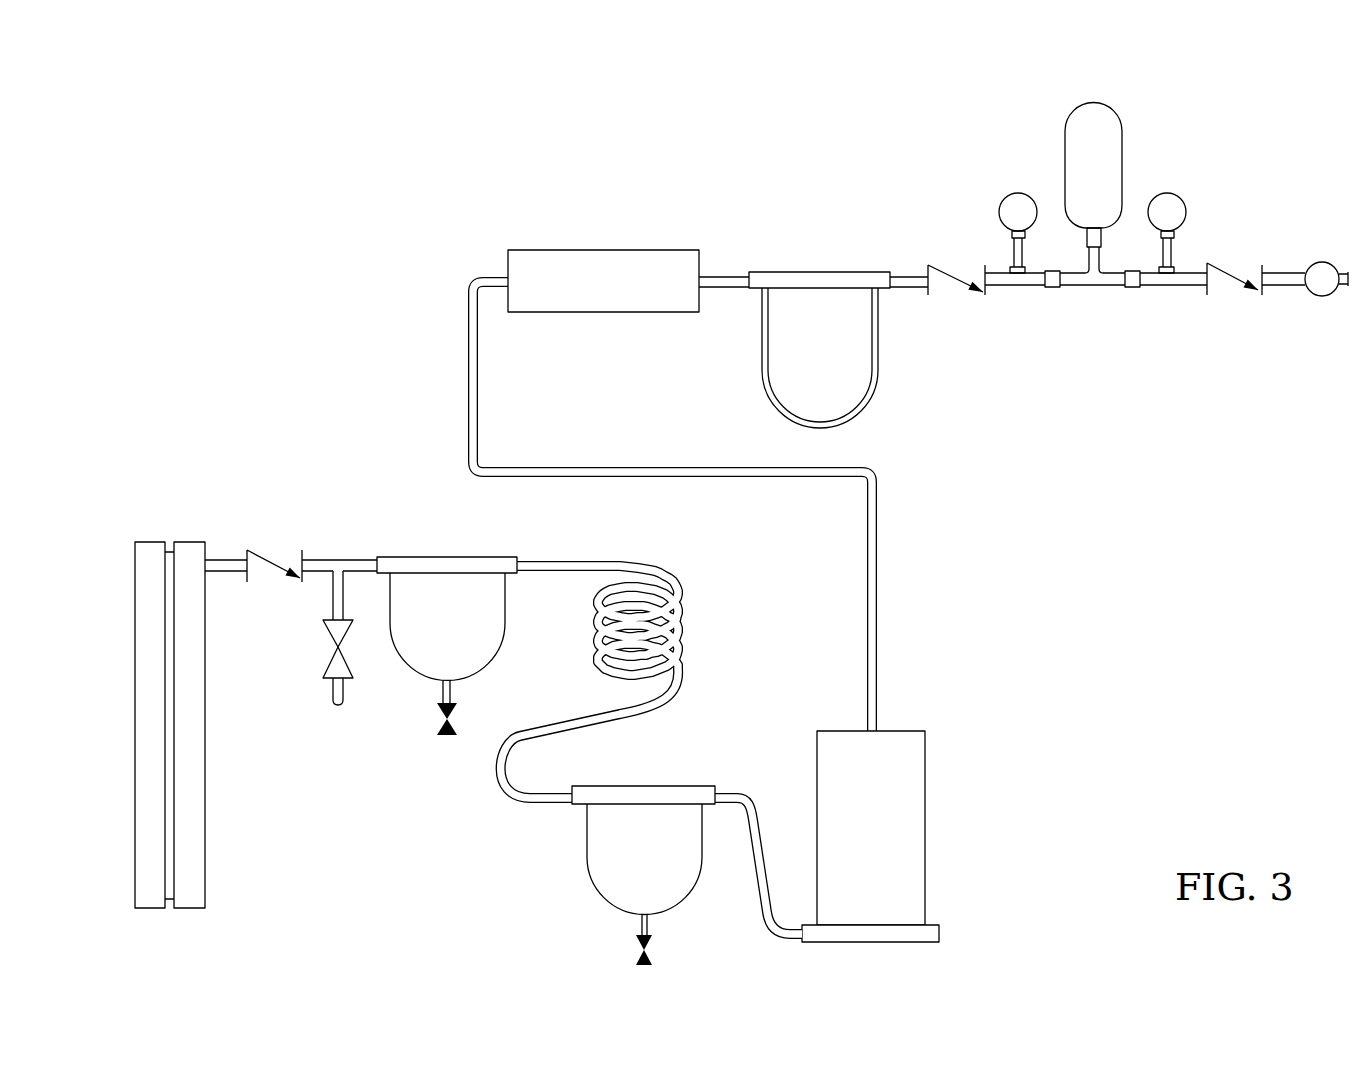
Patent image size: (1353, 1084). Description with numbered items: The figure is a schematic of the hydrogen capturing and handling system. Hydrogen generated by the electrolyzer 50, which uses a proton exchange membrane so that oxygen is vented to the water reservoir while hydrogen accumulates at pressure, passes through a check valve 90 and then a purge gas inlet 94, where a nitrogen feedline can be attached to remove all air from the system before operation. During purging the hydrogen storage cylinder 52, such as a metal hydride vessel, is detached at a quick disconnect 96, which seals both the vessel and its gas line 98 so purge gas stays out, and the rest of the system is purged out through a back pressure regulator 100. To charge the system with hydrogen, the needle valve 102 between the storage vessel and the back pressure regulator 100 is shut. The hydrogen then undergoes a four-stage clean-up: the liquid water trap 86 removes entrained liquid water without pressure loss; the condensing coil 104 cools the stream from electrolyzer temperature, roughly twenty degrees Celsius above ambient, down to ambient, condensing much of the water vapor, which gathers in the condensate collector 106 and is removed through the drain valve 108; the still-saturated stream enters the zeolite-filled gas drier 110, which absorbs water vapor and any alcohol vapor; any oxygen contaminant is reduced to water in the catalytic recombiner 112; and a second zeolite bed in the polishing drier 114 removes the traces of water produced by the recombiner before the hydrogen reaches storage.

The electrolyzer 50 is at (205, 858).
The hydrogen storage cylinder 52 is at (1065, 150).
The liquid water trap 86 is at (455, 557).
The check valve 90 is at (270, 560).
The purge gas inlet 94 is at (337, 647).
The quick disconnect 96 is at (1098, 245).
The gas line 98 is at (1052, 288).
The back pressure regulator 100 is at (1325, 262).
The needle valve 102 is at (1131, 288).
The condensing coil 104 is at (678, 588).
The condensate collector 106 is at (587, 855).
The drain valve 108 is at (637, 946).
The gas drier 110 is at (925, 825).
The catalytic recombiner 112 is at (582, 250).
The polishing drier 114 is at (862, 410).